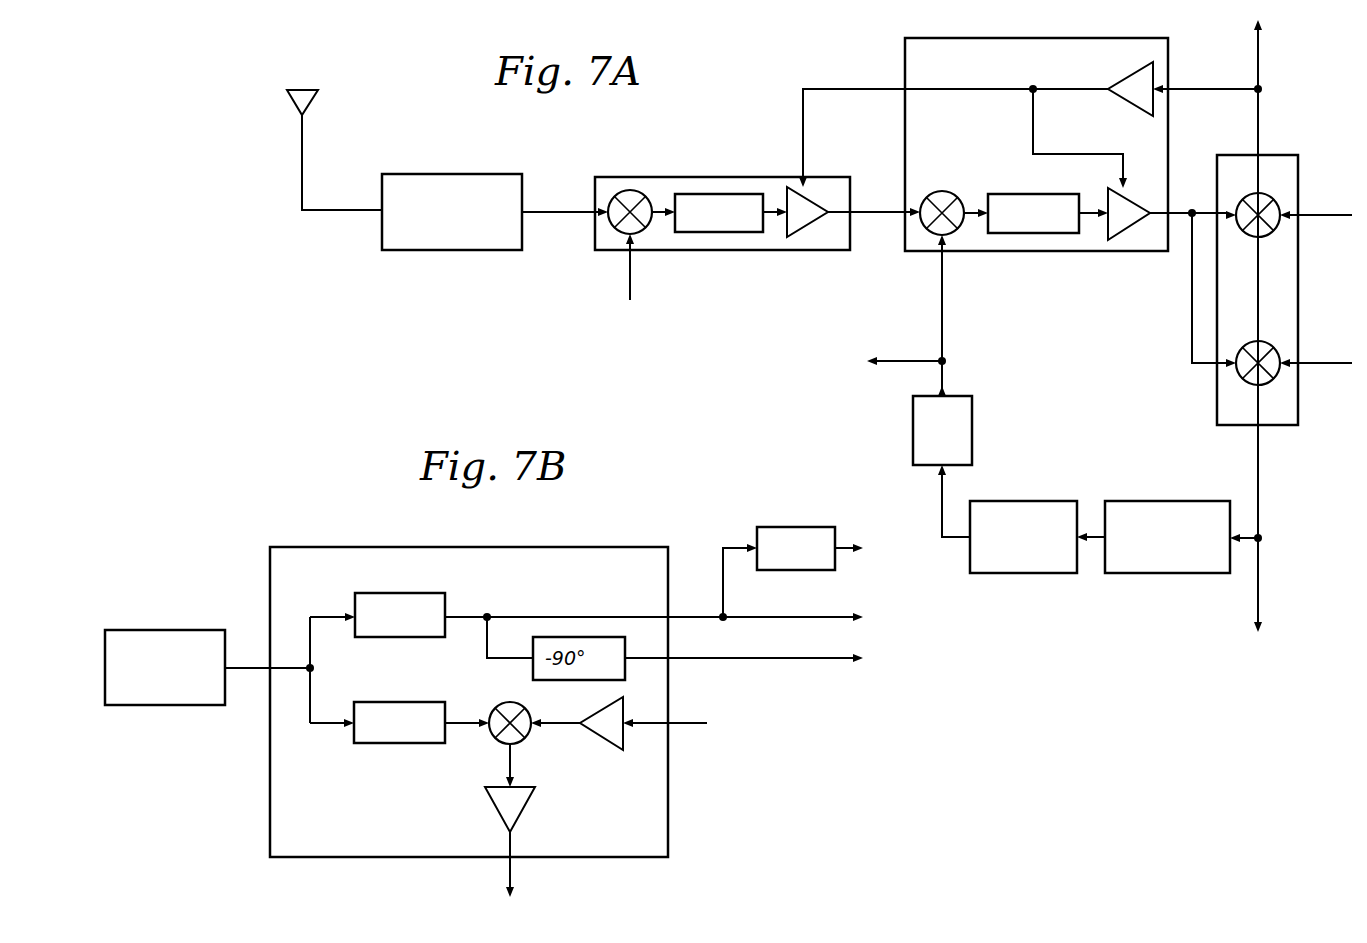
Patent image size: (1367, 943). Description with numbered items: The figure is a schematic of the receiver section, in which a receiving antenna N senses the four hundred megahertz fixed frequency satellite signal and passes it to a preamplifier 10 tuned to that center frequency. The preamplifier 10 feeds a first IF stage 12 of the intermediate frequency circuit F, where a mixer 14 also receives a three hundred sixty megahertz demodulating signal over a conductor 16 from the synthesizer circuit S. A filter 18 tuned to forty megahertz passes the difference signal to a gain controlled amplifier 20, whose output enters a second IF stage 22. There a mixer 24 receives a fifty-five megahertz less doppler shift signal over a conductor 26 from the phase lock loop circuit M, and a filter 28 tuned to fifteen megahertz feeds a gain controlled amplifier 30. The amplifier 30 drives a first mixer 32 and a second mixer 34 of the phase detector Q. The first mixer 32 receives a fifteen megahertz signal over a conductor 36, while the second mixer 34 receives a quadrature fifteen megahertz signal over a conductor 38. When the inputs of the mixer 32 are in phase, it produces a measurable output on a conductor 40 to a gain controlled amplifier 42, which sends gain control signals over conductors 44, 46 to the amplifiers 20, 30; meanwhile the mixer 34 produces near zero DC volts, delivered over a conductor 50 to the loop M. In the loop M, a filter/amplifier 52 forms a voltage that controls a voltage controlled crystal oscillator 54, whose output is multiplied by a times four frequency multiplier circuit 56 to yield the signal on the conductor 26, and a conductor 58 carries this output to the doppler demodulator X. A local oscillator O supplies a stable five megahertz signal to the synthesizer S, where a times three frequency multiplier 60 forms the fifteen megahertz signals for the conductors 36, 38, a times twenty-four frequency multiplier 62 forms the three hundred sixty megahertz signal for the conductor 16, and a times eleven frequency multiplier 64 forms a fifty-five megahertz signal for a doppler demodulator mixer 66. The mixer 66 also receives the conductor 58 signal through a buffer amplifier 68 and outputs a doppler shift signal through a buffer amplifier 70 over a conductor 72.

In FIG. 7A, the receiving antenna N is at (280, 113).
In FIG. 7A, the preamplifier 10 is at (430, 174).
In FIG. 7A, the first IF stage 12 is at (665, 177).
In FIG. 7A, the mixer 14 is at (630, 190).
In FIG. 7A, the conductor 16 is at (630, 292).
In FIG. 7B, the conductor 16 is at (840, 548).
In FIG. 7A, the filter 18 is at (715, 232).
In FIG. 7A, the gain controlled amplifier 20 is at (800, 237).
In FIG. 7A, the intermediate frequency circuit F is at (770, 162).
In FIG. 7A, the conductor 44 is at (845, 89).
In FIG. 7A, the second IF stage 22 is at (1040, 251).
In FIG. 7A, the mixer 24 is at (940, 191).
In FIG. 7A, the conductor 26 is at (945, 294).
In FIG. 7A, the filter 28 is at (1010, 194).
In FIG. 7A, the gain controlled amplifier 30 is at (1125, 240).
In FIG. 7A, the gain controlled amplifier 42 is at (1120, 68).
In FIG. 7A, the conductor 46 is at (1035, 118).
In FIG. 7A, the conductor 40 is at (1262, 118).
In FIG. 7A, the phase detector Q is at (1308, 290).
In FIG. 7A, the first mixer 32 is at (1260, 240).
In FIG. 7A, the second mixer 34 is at (1258, 340).
In FIG. 7A, the conductor 36 is at (1325, 215).
In FIG. 7B, the conductor 36 is at (775, 617).
In FIG. 7A, the conductor 38 is at (1325, 363).
In FIG. 7B, the conductor 38 is at (775, 658).
In FIG. 7A, the conductor 50 is at (1262, 466).
In FIG. 7A, the filter/amplifier 52 is at (1150, 501).
In FIG. 7A, the voltage controlled crystal oscillator 54 is at (1015, 501).
In FIG. 7A, the phase lock loop circuit M is at (1088, 480).
In FIG. 7A, the times four frequency multiplier circuit 56 is at (975, 402).
In FIG. 7A, the conductor 58 is at (910, 361).
In FIG. 7B, the conductor 58 is at (690, 723).
In FIG. 7B, the local oscillator O is at (163, 615).
In FIG. 7B, the synthesizer circuit S is at (545, 537).
In FIG. 7B, the times three frequency multiplier 60 is at (395, 593).
In FIG. 7B, the times twenty-four frequency multiplier 62 is at (765, 527).
In FIG. 7B, the times eleven frequency multiplier 64 is at (395, 743).
In FIG. 7B, the doppler demodulator mixer 66 is at (500, 703).
In FIG. 7B, the buffer amplifier 68 is at (610, 748).
In FIG. 7B, the doppler demodulator X is at (544, 752).
In FIG. 7B, the buffer amplifier 70 is at (495, 815).
In FIG. 7B, the conductor 72 is at (515, 872).